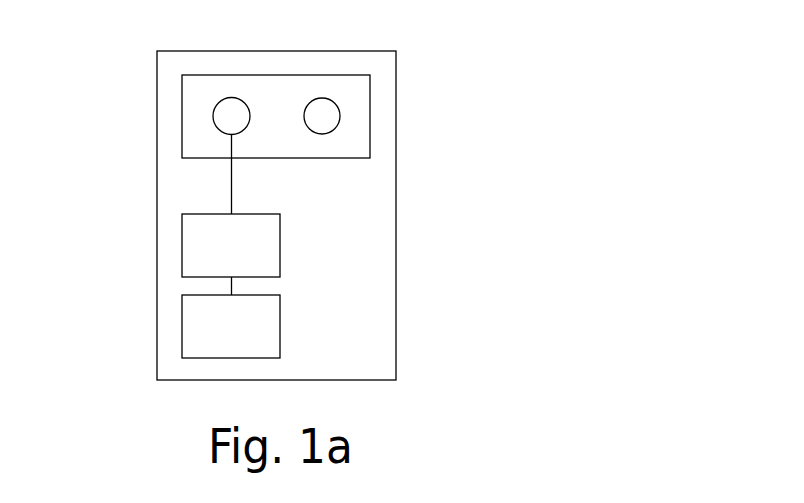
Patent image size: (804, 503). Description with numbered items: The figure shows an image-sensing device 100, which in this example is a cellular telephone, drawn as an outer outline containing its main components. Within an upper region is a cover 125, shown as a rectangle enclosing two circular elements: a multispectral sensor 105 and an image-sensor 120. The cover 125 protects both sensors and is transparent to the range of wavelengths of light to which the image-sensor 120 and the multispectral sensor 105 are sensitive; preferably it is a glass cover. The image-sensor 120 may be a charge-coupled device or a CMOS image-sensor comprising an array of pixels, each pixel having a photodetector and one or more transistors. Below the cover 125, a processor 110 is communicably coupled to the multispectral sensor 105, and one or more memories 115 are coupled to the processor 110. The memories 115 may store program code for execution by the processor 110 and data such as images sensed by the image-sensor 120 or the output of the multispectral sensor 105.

The image-sensing device 100 is at (558, 50).
The multispectral sensor 105 is at (214, 112).
The processor 110 is at (182, 243).
The memories 115 is at (182, 320).
The image-sensor 120 is at (338, 105).
The cover 125 is at (355, 155).